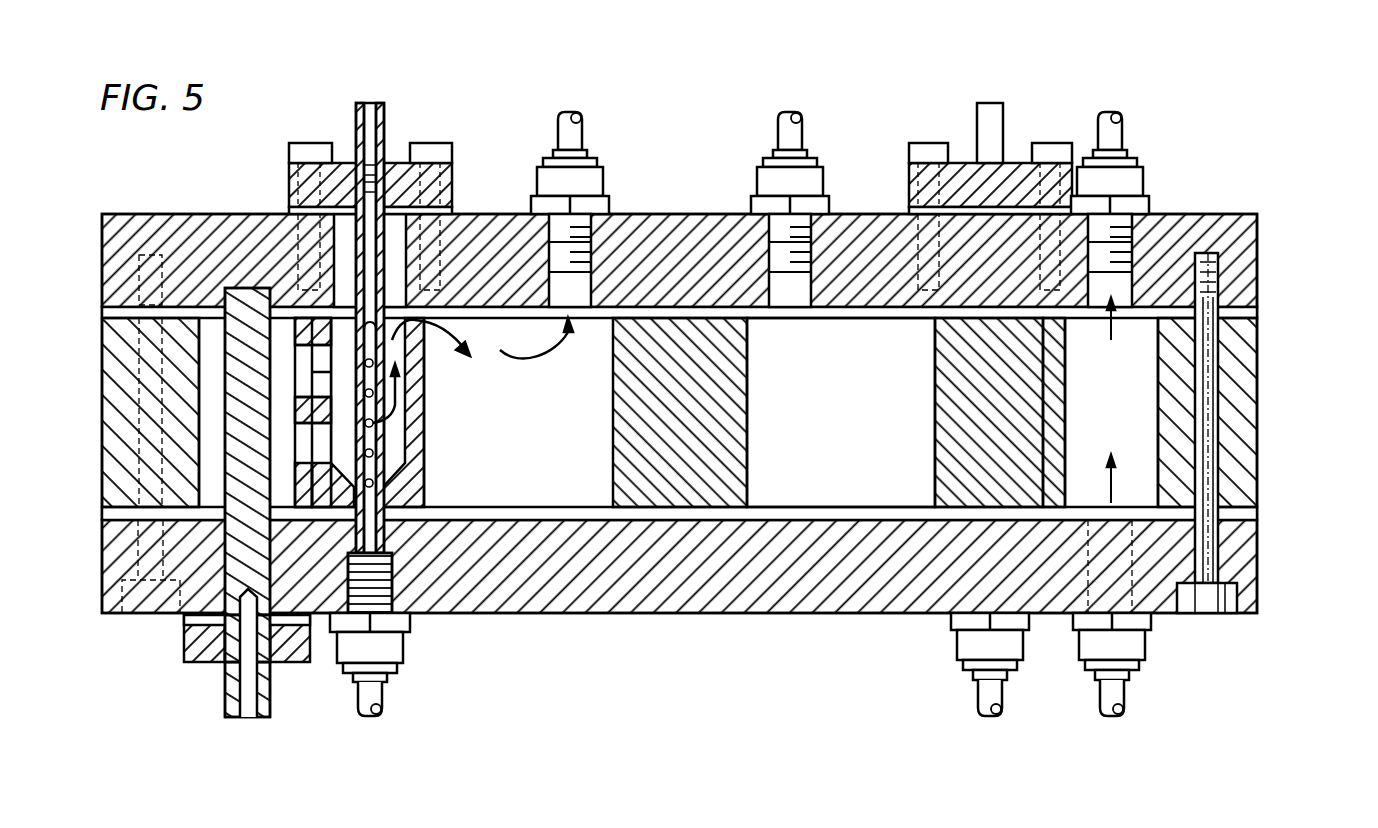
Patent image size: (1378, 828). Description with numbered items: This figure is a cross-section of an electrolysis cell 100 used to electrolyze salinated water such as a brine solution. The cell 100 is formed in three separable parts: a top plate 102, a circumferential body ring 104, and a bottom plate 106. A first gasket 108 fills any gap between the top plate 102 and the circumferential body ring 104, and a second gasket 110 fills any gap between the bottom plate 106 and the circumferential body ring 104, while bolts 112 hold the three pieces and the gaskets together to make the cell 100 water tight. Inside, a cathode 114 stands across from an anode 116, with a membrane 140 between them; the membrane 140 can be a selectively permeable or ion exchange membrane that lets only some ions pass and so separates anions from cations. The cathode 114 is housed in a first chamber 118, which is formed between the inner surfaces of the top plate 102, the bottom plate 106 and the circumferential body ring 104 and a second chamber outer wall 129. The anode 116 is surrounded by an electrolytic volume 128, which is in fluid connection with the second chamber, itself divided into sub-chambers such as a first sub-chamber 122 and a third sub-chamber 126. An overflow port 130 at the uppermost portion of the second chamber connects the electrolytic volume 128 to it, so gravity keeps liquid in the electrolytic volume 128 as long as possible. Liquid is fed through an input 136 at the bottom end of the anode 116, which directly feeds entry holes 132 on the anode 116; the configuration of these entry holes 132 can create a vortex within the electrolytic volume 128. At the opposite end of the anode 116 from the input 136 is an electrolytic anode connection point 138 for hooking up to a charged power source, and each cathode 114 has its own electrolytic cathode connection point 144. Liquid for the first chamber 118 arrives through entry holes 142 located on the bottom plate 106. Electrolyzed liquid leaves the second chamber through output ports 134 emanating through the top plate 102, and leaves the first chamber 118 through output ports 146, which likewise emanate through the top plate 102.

The cell 100 is at (1255, 92).
The top plate 102 is at (1256, 257).
The circumferential body ring 104 is at (1243, 384).
The bottom plate 106 is at (1248, 558).
The first gasket 108 is at (1256, 310).
The second gasket 110 is at (1256, 516).
The bolts 112 is at (140, 362).
The cathode 114 is at (270, 695).
The anode 116 is at (353, 127).
The first chamber 118 is at (1130, 383).
The first sub-chamber 122 is at (822, 445).
The third sub-chamber 126 is at (577, 348).
The electrolytic volume 128 is at (397, 250).
The second chamber outer wall 129 is at (295, 414).
The overflow port 130 is at (407, 322).
The entry holes 132 is at (373, 453).
The output ports 134 is at (603, 178).
The input 136 is at (402, 643).
The electrolytic anode connection point 138 is at (370, 105).
The membrane 140 is at (312, 373).
The entry holes 142 is at (1143, 649).
The electrolytic cathode connection point 144 is at (248, 707).
The output ports 146 is at (1143, 175).